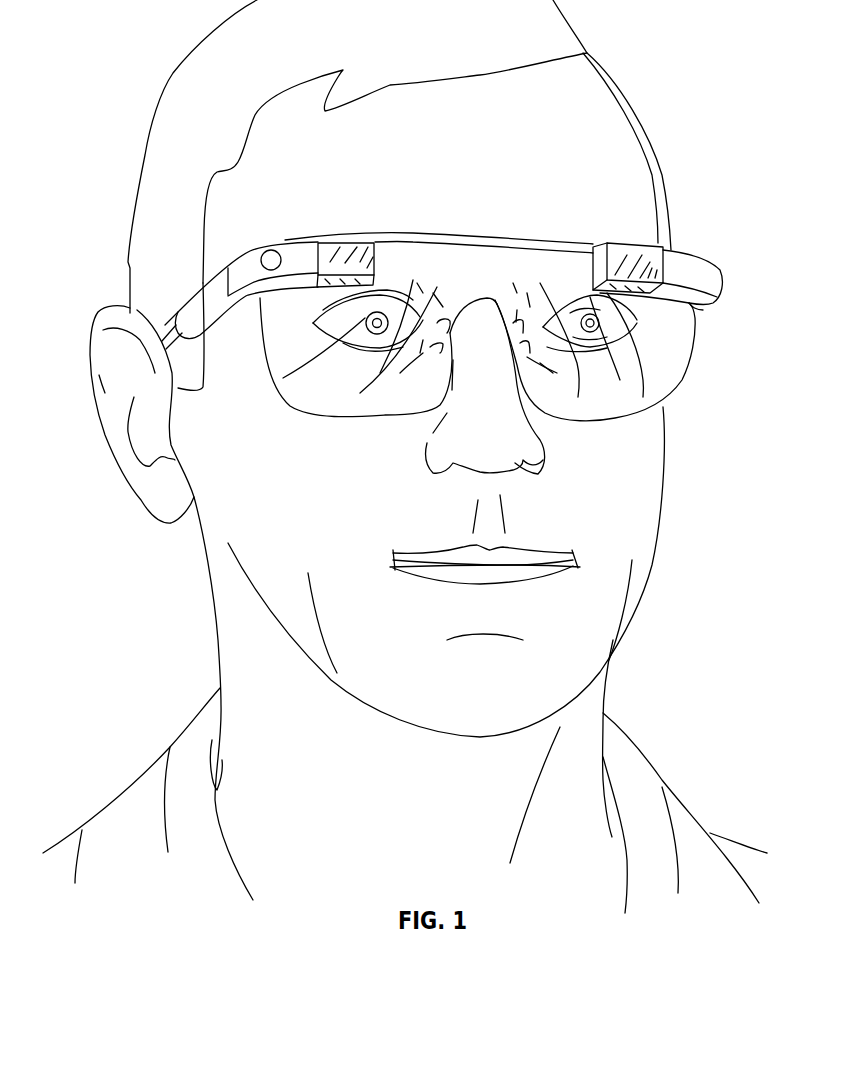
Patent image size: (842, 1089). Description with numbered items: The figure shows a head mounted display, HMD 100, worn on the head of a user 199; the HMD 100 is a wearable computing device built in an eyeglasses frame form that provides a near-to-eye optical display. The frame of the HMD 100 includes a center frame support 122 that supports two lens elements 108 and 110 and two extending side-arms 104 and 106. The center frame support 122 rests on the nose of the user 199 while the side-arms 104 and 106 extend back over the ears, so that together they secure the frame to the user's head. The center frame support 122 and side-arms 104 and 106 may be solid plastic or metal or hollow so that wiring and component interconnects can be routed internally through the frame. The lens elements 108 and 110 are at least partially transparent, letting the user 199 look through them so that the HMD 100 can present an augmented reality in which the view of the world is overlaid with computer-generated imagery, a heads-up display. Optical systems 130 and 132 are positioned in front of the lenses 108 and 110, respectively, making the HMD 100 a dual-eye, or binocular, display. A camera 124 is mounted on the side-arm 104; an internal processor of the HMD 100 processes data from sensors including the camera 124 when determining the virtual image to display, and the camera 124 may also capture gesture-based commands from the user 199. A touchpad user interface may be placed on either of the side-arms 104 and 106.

The HMD 100 is at (737, 385).
The side-arm 104 is at (167, 325).
The side-arm 106 is at (693, 313).
The lens element 108 is at (345, 417).
The lens element 110 is at (588, 418).
The center frame support 122 is at (486, 238).
The camera 124 is at (273, 251).
The optical system 130 is at (345, 248).
The optical system 132 is at (634, 245).
The user 199 is at (150, 773).